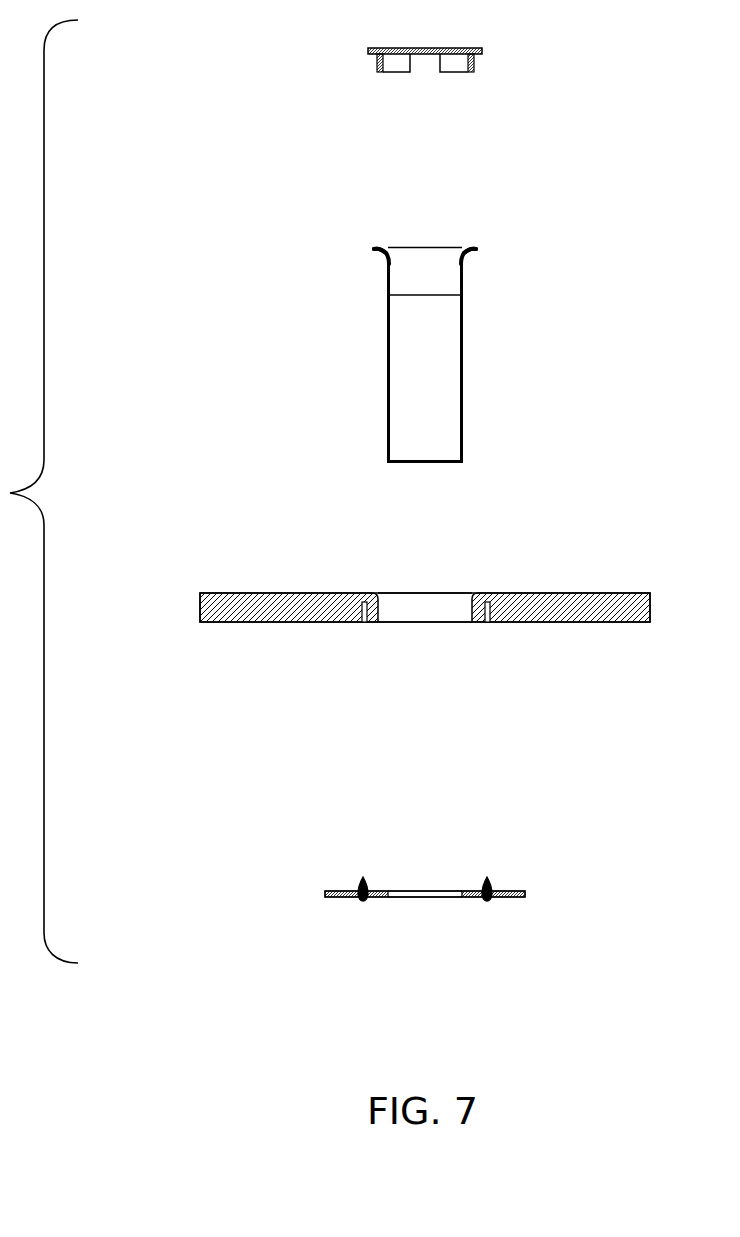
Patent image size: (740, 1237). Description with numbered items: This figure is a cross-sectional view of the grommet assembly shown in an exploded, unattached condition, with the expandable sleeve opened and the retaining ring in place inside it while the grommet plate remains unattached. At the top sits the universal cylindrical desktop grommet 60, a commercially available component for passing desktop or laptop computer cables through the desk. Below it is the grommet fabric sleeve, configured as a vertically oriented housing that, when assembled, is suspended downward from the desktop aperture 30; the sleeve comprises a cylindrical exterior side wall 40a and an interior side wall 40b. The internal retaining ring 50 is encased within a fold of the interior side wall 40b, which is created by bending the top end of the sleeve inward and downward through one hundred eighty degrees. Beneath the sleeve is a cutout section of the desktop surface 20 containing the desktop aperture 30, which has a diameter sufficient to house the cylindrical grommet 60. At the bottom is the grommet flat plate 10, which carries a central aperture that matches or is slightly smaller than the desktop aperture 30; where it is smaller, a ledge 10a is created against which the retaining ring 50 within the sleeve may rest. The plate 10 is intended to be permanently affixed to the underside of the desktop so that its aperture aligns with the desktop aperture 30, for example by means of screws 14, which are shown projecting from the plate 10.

The grommet flat plate 10 is at (502, 892).
The ledge 10a is at (467, 891).
The screws 14 is at (367, 900).
The desktop surface 20 is at (540, 593).
The desktop aperture 30 is at (420, 600).
The cylindrical exterior side wall 40a is at (425, 258).
The interior side wall 40b is at (413, 348).
The internal retaining ring 50 is at (474, 251).
The universal cylindrical desktop grommet 60 is at (474, 64).